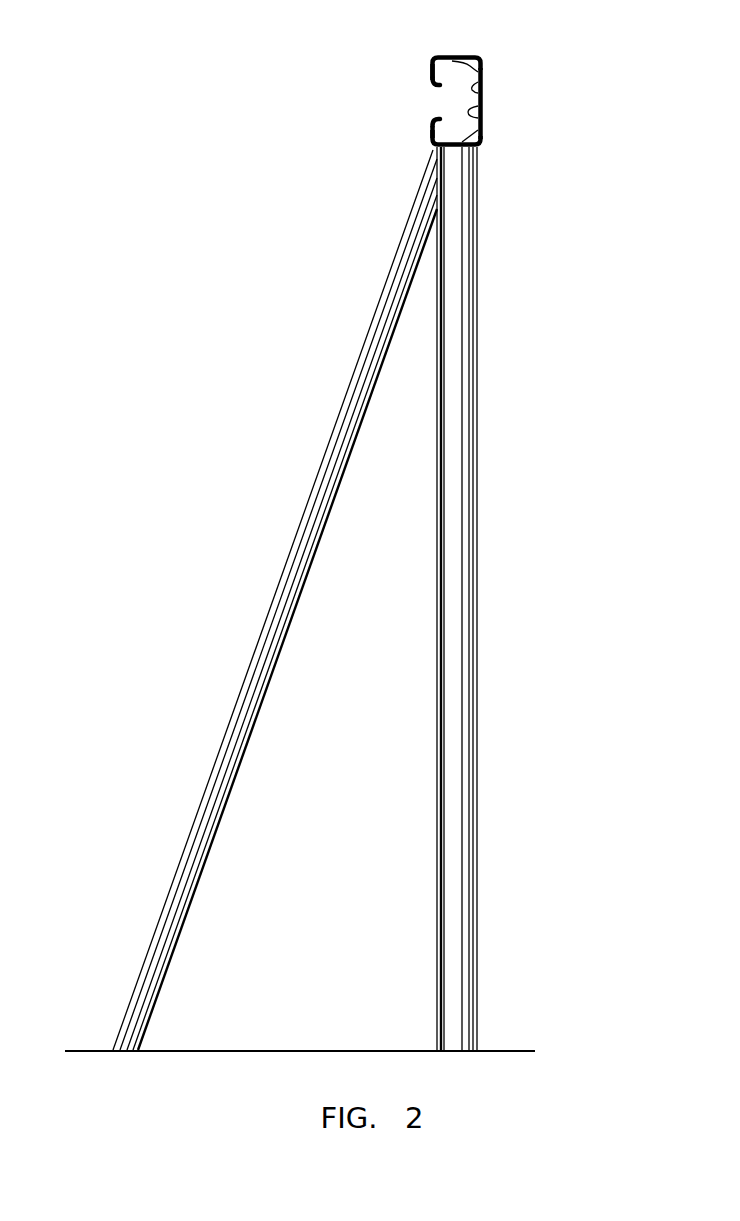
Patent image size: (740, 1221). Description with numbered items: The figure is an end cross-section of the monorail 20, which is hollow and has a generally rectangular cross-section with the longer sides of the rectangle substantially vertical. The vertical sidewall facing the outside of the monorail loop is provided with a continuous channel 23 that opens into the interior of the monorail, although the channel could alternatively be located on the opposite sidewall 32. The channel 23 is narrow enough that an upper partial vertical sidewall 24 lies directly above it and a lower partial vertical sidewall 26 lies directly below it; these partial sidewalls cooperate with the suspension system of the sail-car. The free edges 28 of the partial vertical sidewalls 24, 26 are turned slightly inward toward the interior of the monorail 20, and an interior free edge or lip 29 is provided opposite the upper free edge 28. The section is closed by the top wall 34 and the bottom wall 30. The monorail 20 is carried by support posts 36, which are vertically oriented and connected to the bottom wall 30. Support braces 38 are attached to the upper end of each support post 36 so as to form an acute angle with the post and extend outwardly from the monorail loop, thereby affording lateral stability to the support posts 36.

The monorail 20 is at (454, 85).
The channel 23 is at (450, 100).
The upper partial vertical sidewall 24 is at (430, 72).
The lower partial vertical sidewall 26 is at (430, 130).
The free edges 28 is at (432, 84).
The interior free edge or lip 29 is at (483, 92).
The bottom wall 30 is at (483, 135).
The sidewall 32 is at (483, 108).
The top wall 34 is at (483, 65).
The support posts 36 is at (466, 527).
The support braces 38 is at (305, 516).